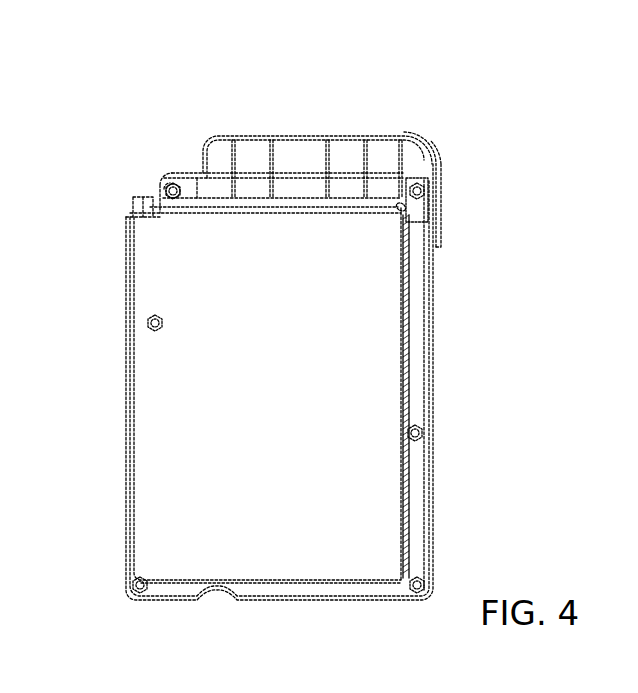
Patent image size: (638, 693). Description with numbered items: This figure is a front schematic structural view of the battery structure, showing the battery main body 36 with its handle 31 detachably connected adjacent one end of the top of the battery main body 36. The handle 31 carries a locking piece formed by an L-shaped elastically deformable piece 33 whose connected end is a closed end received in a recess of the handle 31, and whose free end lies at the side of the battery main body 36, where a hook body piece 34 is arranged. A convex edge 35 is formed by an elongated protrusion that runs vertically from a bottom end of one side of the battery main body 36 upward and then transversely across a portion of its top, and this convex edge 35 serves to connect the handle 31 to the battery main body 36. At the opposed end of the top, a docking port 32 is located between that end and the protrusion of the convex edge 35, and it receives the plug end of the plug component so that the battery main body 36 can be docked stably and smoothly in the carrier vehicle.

The handle 31 is at (310, 158).
The docking port 32 is at (133, 197).
The L-shaped elastically deformable piece 33 is at (443, 183).
The hook body piece 34 is at (445, 235).
The convex edge 35 is at (420, 393).
The battery main body 36 is at (278, 488).